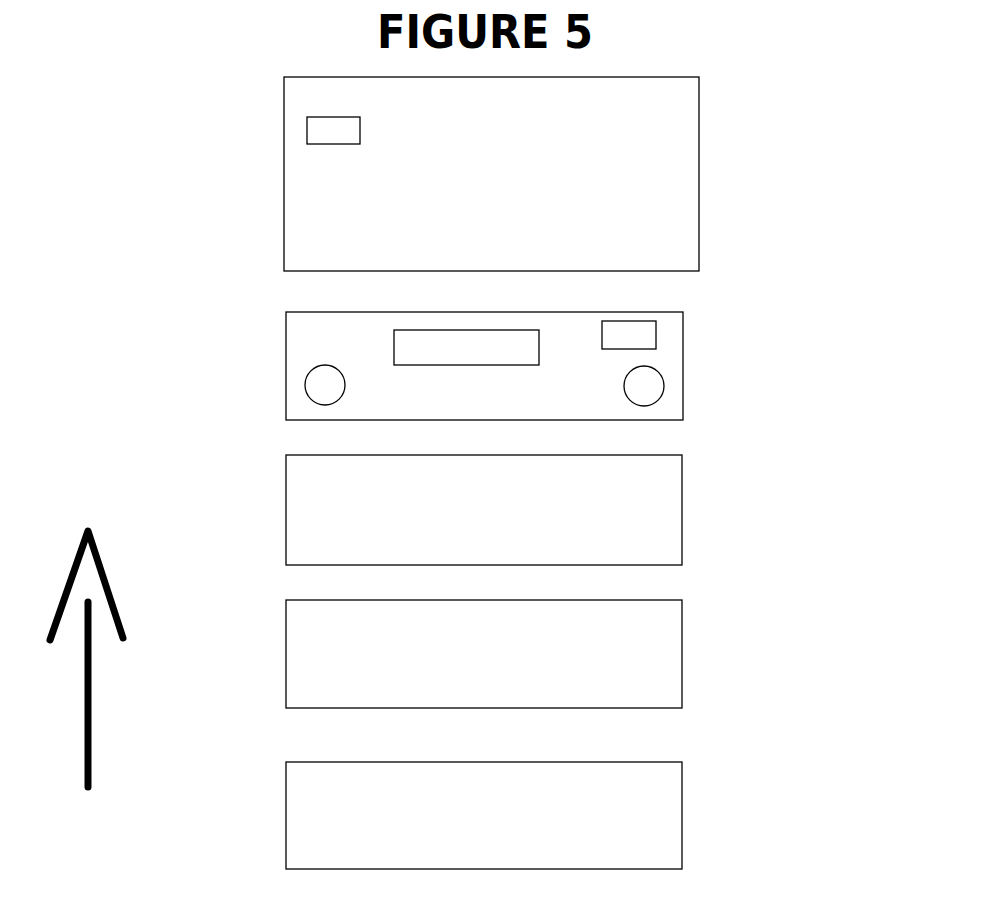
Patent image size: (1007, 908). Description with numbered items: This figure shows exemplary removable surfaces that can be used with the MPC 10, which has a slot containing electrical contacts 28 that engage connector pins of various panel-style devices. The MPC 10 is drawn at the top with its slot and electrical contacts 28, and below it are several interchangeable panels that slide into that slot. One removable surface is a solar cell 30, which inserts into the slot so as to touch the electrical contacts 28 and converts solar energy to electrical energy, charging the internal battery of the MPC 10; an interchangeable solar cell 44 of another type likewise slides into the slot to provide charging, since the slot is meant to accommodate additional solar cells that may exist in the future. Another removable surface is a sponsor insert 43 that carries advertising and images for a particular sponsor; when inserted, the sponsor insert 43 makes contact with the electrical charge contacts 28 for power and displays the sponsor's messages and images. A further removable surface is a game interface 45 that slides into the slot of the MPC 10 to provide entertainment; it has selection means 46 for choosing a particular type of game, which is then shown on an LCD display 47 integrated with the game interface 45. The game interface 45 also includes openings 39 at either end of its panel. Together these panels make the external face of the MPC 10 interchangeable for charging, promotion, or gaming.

The MPC 10 is at (272, 264).
The electrical contacts 28 is at (360, 128).
The solar cell 30 is at (683, 813).
The apertures 39 is at (305, 392).
The sponsor insert 43 is at (683, 652).
The interchangeable solar cell 44 is at (683, 508).
The game interface 45 is at (683, 363).
The selection means 46 is at (656, 333).
The LCD display 47 is at (392, 348).